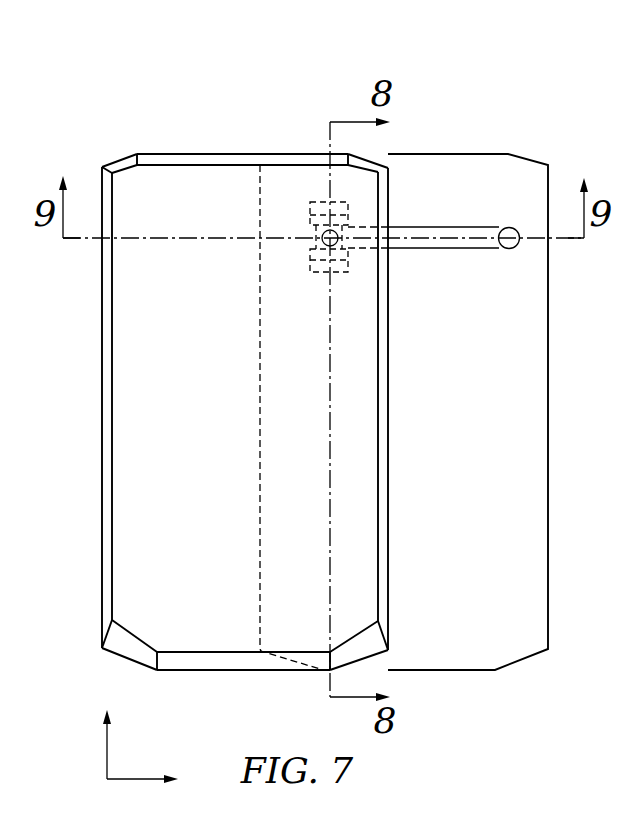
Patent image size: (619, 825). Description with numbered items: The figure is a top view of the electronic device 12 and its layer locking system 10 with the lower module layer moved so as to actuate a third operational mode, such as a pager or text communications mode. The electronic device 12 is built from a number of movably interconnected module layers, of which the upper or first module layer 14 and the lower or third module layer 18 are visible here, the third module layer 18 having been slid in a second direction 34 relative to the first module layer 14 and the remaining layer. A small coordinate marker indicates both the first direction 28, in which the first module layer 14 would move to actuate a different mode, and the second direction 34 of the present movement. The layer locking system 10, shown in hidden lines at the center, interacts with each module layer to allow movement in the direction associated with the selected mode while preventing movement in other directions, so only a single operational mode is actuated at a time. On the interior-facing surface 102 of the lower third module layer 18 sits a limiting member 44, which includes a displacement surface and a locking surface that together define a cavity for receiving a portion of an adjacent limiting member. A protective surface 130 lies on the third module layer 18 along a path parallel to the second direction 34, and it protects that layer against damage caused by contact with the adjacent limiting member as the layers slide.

The electronic device 12 is at (150, 43).
The layer locking system 10 is at (307, 196).
The first module layer 14 is at (120, 437).
The third module layer 18 is at (536, 540).
The interior-facing surface 102 is at (468, 417).
The protective surface 130 is at (398, 228).
The limiting member 44 is at (512, 244).
The first direction 28 is at (107, 752).
The second direction 34 is at (136, 779).